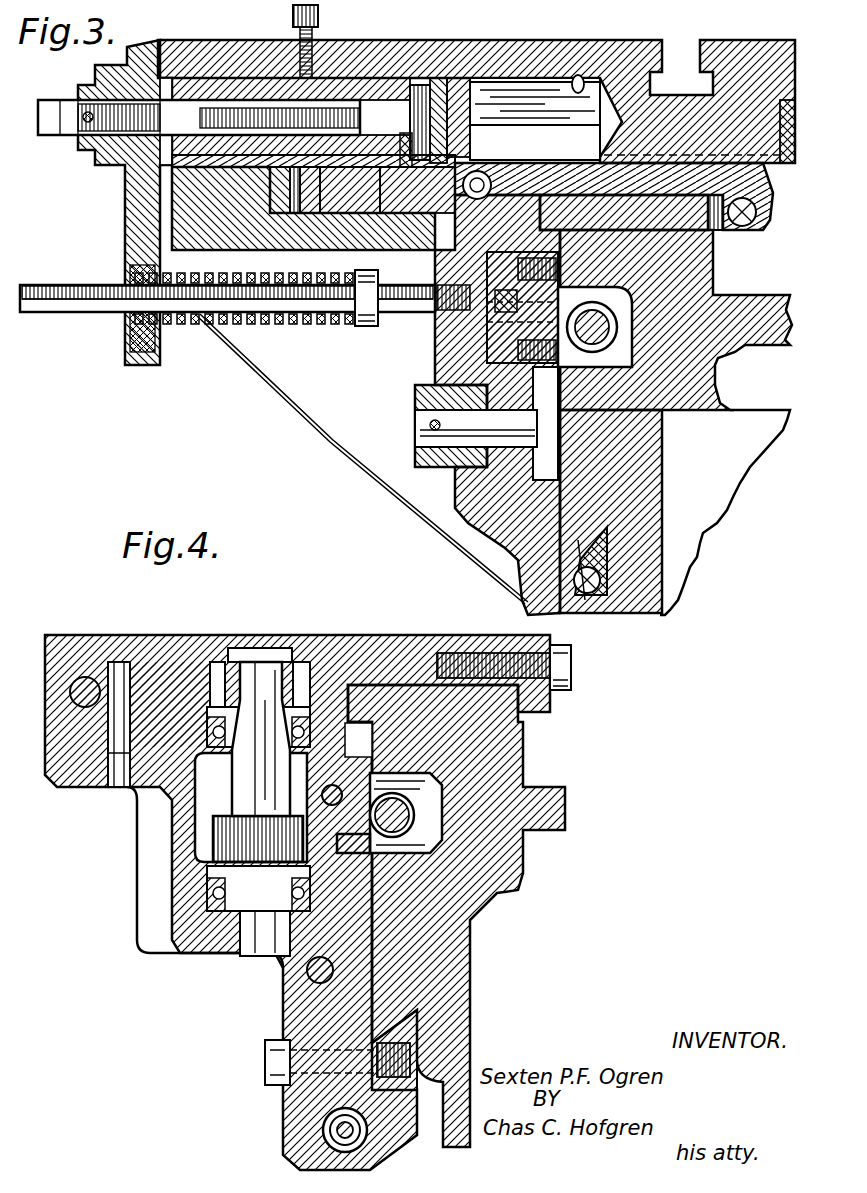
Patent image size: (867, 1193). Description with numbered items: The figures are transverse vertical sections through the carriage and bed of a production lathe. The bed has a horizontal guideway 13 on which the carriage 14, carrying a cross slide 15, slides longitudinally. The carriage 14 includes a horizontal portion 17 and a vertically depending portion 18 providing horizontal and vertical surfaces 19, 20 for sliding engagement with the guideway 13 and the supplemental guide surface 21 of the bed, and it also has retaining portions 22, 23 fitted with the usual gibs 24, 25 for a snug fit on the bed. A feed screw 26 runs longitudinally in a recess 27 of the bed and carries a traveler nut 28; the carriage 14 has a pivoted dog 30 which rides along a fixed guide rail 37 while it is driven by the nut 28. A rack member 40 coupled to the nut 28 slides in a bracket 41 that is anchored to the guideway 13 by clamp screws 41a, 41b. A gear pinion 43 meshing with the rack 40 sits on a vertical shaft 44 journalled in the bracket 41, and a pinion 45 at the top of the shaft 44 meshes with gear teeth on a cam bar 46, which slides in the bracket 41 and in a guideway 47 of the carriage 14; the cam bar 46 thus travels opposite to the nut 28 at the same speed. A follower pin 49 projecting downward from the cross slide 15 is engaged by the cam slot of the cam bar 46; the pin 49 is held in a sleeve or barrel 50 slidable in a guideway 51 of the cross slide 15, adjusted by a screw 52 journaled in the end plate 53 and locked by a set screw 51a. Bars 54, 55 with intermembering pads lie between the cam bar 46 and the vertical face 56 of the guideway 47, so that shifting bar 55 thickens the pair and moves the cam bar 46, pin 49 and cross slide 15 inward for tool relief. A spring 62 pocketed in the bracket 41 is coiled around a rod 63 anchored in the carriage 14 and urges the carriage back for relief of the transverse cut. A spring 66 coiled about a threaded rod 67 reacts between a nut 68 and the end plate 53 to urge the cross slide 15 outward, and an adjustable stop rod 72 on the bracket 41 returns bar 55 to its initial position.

In FIG. 3, the horizontal guideway 13 is at (716, 246).
In FIG. 4, the horizontal guideway 13 is at (478, 718).
In FIG. 3, the carriage 14 is at (185, 220).
In FIG. 3, the cross slide 15 is at (628, 52).
In FIG. 3, the horizontal portion 17 is at (571, 178).
In FIG. 3, the vertically depending portion 18 is at (470, 532).
In FIG. 3, the horizontal surface 19 is at (716, 268).
In FIG. 3, the vertical surface 20 is at (563, 535).
In FIG. 3, the supplemental guide surface 21 is at (578, 545).
In FIG. 3, the retaining portion 22 is at (748, 201).
In FIG. 3, the retaining portion 23 is at (612, 590).
In FIG. 3, the gib 24 is at (716, 228).
In FIG. 3, the gib 25 is at (600, 548).
In FIG. 3, the feed screw 26 is at (607, 340).
In FIG. 4, the feed screw 26 is at (420, 830).
In FIG. 3, the recess 27 is at (578, 395).
In FIG. 4, the traveler nut 28 is at (425, 790).
In FIG. 3, the pivoted dog 30 is at (500, 398).
In FIG. 3, the fixed guide rail 37 is at (500, 488).
In FIG. 4, the rack member 40 is at (345, 850).
In FIG. 4, the bracket 41 is at (205, 940).
In FIG. 4, the clamp screw 41a is at (572, 666).
In FIG. 4, the clamp screw 41b is at (262, 1058).
In FIG. 4, the gear pinion 43 is at (215, 840).
In FIG. 4, the shaft 44 is at (228, 773).
In FIG. 4, the pinion 45 is at (305, 660).
In FIG. 3, the cam bar 46 is at (392, 212).
In FIG. 4, the cam bar 46 is at (165, 675).
In FIG. 3, the guideway 47 is at (345, 195).
In FIG. 3, the follower pin 49 is at (470, 132).
In FIG. 3, the sleeve or barrel 50 is at (535, 118).
In FIG. 3, the guideway 51 is at (578, 90).
In FIG. 3, the set screw 51a is at (320, 30).
In FIG. 3, the screw 52 is at (360, 113).
In FIG. 3, the end plate 53 is at (133, 188).
In FIG. 3, the bar 54 is at (310, 205).
In FIG. 3, the bar 55 is at (290, 205).
In FIG. 3, the vertical face 56 is at (275, 195).
In FIG. 4, the spring 62 is at (322, 1118).
In FIG. 4, the rod 63 is at (338, 1130).
In FIG. 3, the spring 66 is at (293, 320).
In FIG. 3, the threaded rod 67 is at (400, 306).
In FIG. 3, the nut 68 is at (362, 326).
In FIG. 4, the adjustable stop rod 72 is at (85, 677).